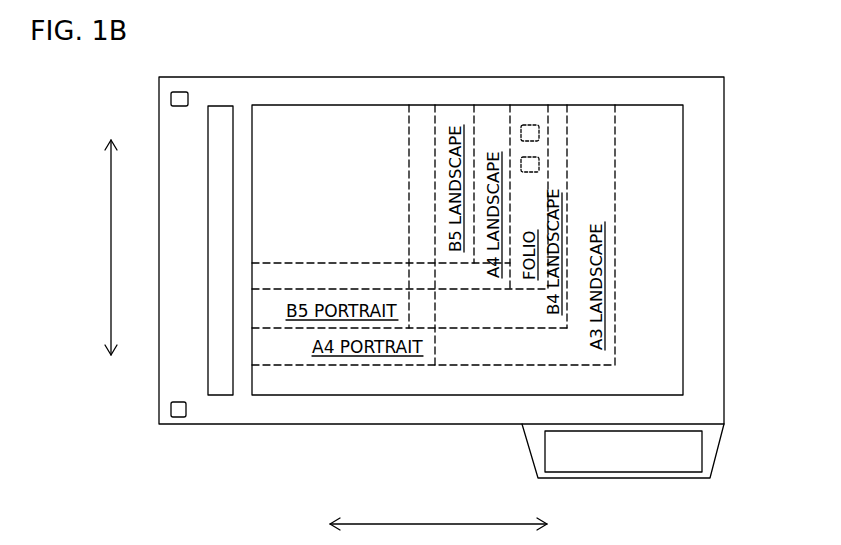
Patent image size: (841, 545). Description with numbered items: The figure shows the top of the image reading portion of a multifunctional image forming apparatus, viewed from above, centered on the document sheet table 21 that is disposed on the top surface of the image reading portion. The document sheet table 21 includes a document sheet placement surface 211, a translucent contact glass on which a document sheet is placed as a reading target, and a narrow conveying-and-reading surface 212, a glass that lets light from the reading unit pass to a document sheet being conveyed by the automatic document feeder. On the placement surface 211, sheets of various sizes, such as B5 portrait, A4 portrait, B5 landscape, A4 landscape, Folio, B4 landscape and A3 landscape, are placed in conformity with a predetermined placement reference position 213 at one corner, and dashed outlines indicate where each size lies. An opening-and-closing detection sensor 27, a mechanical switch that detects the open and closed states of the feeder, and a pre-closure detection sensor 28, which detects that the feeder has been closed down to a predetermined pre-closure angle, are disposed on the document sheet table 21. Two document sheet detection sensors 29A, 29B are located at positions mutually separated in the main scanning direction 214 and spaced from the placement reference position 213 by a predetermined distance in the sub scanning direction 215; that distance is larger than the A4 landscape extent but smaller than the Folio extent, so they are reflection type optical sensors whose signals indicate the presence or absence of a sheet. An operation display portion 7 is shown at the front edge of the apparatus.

The operation display portion 7 is at (702, 452).
The document sheet table 21 is at (381, 424).
The opening-and-closing detection sensor 27 is at (178, 417).
The pre-closure detection sensor 28 is at (178, 92).
The document sheet detection sensor 29A is at (540, 164).
The document sheet detection sensor 29B is at (540, 133).
The document sheet placement surface 211 is at (305, 395).
The conveying-and-reading surface 212 is at (220, 395).
The placement reference position 213 is at (256, 113).
The main scanning direction 214 is at (111, 244).
The sub scanning direction 215 is at (435, 521).